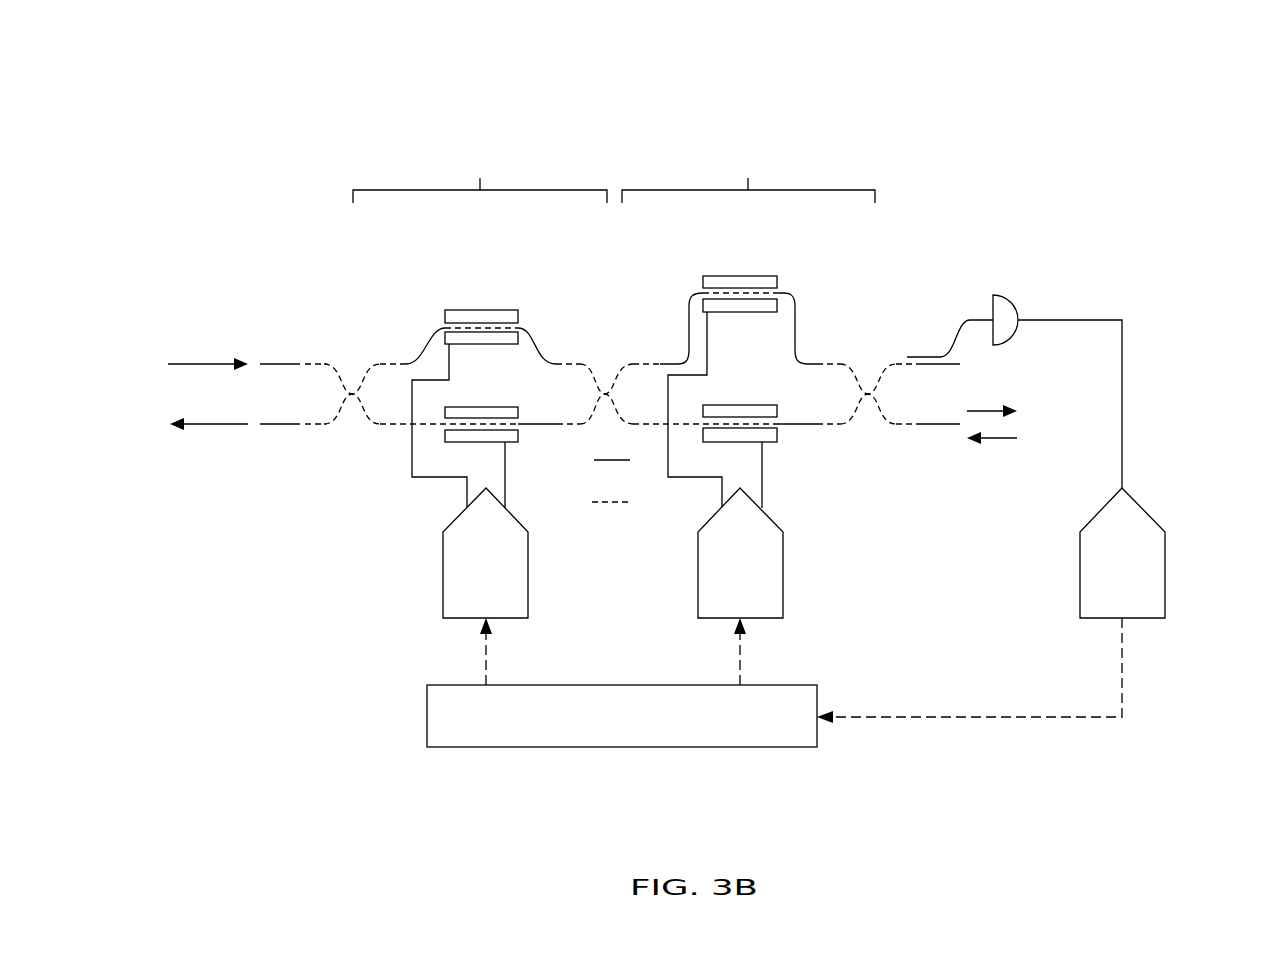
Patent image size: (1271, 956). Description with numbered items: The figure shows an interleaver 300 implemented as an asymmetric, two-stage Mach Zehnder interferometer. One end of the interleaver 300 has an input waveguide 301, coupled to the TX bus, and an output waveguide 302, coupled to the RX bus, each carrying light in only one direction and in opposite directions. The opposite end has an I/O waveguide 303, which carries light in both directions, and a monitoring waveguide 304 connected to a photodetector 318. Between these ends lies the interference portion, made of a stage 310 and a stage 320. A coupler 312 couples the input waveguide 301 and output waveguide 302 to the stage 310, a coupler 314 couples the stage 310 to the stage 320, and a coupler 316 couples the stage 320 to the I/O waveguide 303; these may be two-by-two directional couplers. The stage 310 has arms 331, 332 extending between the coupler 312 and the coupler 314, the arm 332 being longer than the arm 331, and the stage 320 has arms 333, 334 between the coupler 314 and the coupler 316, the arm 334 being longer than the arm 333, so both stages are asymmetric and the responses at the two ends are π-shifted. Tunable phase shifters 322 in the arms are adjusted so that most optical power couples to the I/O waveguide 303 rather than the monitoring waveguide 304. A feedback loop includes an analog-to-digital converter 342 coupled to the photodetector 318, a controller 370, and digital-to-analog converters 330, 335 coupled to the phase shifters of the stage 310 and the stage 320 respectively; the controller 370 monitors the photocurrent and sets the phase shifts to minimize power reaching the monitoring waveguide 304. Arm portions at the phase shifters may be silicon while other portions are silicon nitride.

The interleaver 300 is at (166, 158).
The input waveguide 301 is at (180, 364).
The output waveguide 302 is at (197, 428).
The I/O waveguide 303 is at (1057, 457).
The monitoring waveguide 304 is at (912, 355).
The stage 310 is at (480, 157).
The coupler 312 is at (348, 405).
The coupler 314 is at (606, 392).
The coupler 316 is at (871, 399).
The photodetector 318 is at (1010, 296).
The stage 320 is at (748, 309).
The tunable phase shifter 322 is at (481, 310).
The digital-to-analog converter 330 is at (530, 565).
The arm 331 is at (393, 428).
The arm 332 is at (378, 368).
The arm 333 is at (835, 426).
The arm 334 is at (822, 362).
The digital-to-analog converter 335 is at (785, 565).
The analog-to-digital converter 342 is at (1167, 565).
The controller 370 is at (620, 747).